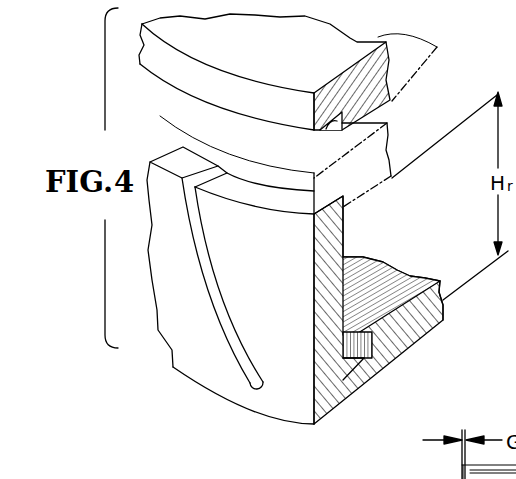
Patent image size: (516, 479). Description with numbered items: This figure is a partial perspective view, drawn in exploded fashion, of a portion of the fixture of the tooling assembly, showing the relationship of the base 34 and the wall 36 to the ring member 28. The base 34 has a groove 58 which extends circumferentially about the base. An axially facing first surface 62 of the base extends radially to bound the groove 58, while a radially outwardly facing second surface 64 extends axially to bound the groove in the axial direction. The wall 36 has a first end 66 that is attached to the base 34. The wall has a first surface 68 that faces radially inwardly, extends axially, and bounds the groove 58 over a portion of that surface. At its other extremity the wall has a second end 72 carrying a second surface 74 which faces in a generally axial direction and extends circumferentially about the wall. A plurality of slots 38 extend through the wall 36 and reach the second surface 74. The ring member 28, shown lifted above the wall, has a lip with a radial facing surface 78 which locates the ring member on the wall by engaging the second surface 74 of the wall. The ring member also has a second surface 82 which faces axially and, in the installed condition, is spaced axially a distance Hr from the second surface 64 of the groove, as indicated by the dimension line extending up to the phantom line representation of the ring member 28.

The ring member 28 is at (437, 48).
The radial facing surface 78 is at (336, 105).
The second surface 82 is at (340, 142).
The wall 36 is at (280, 313).
The second end 72 is at (306, 222).
The second surface 74 is at (180, 165).
The slots 38 is at (238, 353).
The first end 66 is at (341, 414).
The first surface 68 is at (344, 241).
The first surface 62 is at (355, 336).
The base 34 is at (423, 338).
The groove 58 is at (385, 364).
The second surface 64 is at (358, 374).